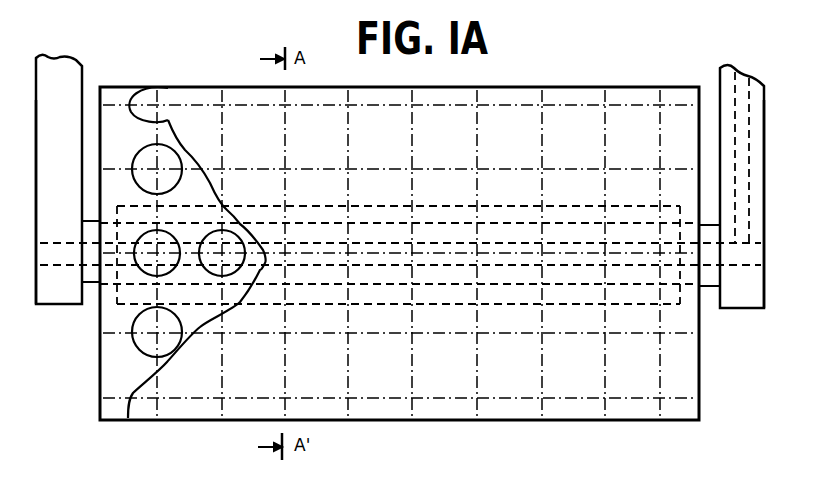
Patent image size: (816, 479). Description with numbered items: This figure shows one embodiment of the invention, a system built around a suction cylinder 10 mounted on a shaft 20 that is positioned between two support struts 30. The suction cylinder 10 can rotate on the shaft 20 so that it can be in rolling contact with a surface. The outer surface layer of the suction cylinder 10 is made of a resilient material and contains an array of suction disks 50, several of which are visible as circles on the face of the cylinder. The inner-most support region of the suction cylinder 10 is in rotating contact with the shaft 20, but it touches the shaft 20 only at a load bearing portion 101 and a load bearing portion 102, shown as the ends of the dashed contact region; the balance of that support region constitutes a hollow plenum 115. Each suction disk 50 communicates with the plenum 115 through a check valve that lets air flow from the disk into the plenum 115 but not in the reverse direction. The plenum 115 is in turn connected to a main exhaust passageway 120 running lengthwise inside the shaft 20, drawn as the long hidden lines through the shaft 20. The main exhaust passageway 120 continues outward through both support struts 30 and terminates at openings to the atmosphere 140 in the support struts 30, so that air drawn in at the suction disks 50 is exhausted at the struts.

The suction cylinder 10 is at (613, 81).
The shaft 20 is at (718, 282).
The support struts 30 is at (60, 305).
The suction disks 50 is at (167, 268).
The load bearing portion 101 is at (118, 215).
The load bearing portion 102 is at (681, 207).
The hollow plenum 115 is at (368, 292).
The main exhaust passageway 120 is at (426, 243).
The openings to the atmosphere 140 is at (36, 252).